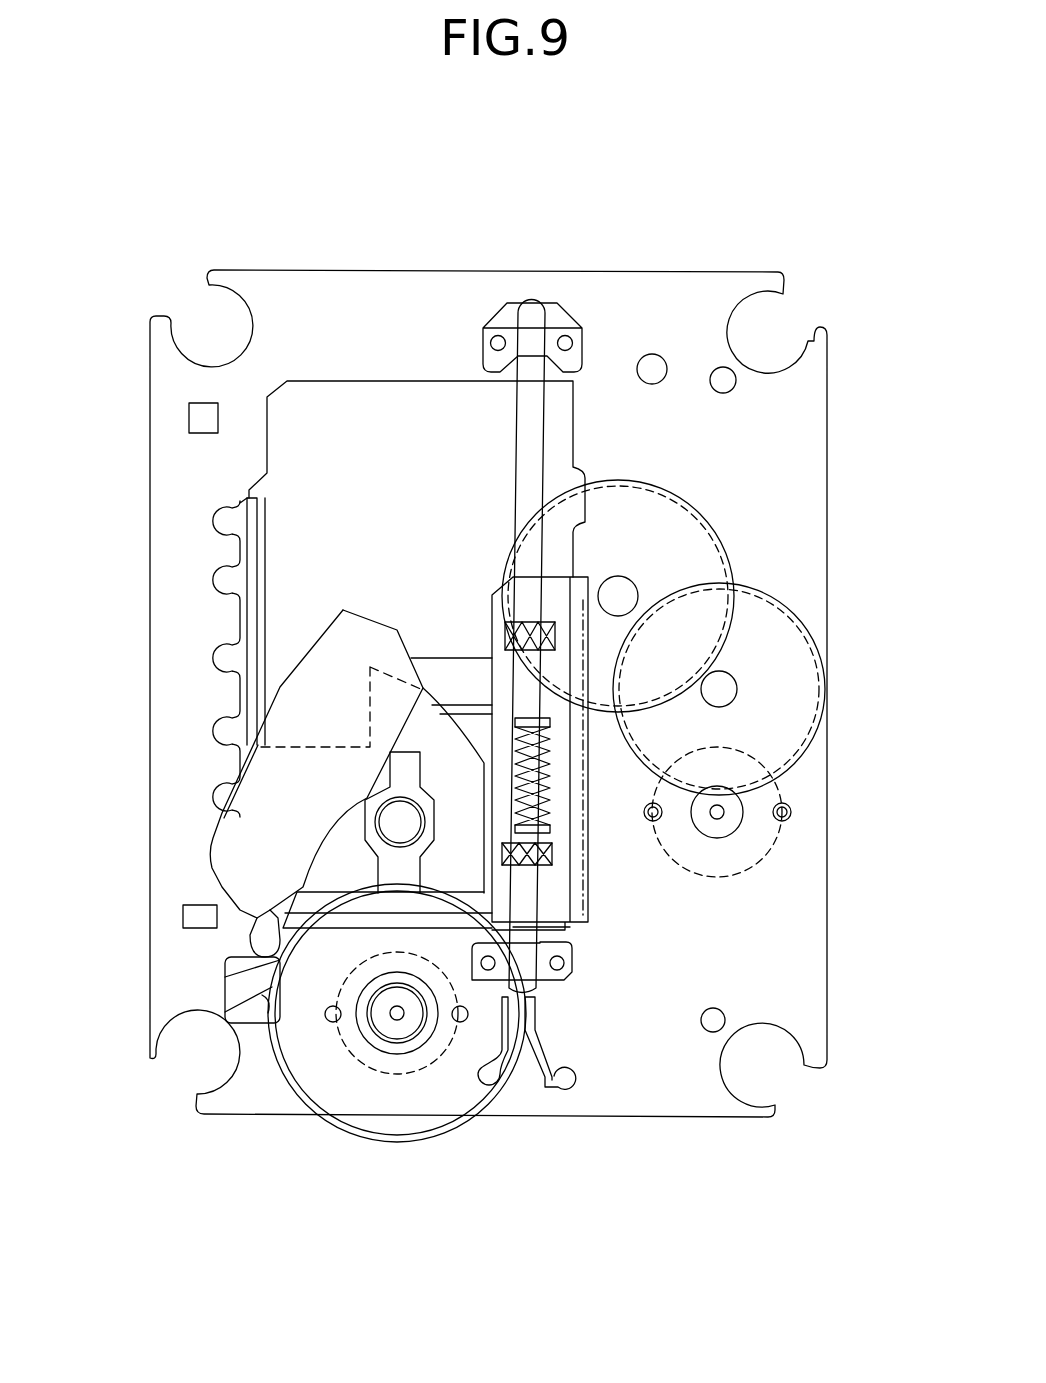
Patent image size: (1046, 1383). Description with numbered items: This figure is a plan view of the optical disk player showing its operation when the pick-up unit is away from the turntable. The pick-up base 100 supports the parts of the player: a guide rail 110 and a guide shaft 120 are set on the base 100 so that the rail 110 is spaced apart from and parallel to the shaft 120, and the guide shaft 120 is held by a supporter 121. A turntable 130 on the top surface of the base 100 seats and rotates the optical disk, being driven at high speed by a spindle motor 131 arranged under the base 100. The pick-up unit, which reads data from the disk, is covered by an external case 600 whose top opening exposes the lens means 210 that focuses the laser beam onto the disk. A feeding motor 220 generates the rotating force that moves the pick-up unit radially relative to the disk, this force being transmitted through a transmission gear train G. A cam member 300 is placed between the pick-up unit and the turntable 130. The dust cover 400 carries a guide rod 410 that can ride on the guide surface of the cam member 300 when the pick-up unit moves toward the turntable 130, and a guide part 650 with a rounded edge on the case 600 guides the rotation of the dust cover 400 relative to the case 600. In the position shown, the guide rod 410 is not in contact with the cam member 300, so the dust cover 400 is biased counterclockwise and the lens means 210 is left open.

The pick-up base 100 is at (826, 940).
The guide rail 110 is at (270, 575).
The guide shaft 120 is at (517, 418).
The supporter 121 is at (577, 322).
The turntable 130 is at (327, 1132).
The spindle motor 131 is at (405, 1078).
The lens means 210 is at (408, 823).
The feeding motor 220 is at (767, 853).
The cam member 300 is at (213, 978).
The dust cover 400 is at (211, 827).
The guide rod 410 is at (252, 945).
The external case 600 is at (455, 688).
The guide part 650 is at (440, 658).
The transmission gear train G is at (830, 697).